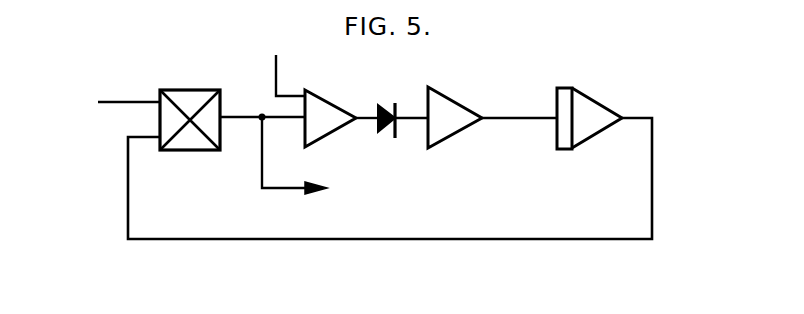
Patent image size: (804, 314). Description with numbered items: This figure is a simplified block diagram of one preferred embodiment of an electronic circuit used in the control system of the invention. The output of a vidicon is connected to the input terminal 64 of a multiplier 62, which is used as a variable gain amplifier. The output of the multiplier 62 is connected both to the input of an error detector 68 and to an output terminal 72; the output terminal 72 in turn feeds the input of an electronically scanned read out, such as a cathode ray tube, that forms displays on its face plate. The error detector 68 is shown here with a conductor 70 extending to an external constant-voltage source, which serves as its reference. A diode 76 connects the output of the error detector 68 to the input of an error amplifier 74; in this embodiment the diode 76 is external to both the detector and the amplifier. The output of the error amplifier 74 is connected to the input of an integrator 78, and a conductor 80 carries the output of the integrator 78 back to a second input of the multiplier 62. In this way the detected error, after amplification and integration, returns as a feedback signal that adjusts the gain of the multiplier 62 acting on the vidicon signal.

The multiplier 62 is at (183, 90).
The input terminal 64 is at (114, 102).
The error detector 68 is at (327, 101).
The conductor 70 is at (277, 70).
The output terminal 72 is at (279, 190).
The error amplifier 74 is at (445, 93).
The diode 76 is at (383, 130).
The integrator 78 is at (586, 94).
The conductor 80 is at (418, 239).